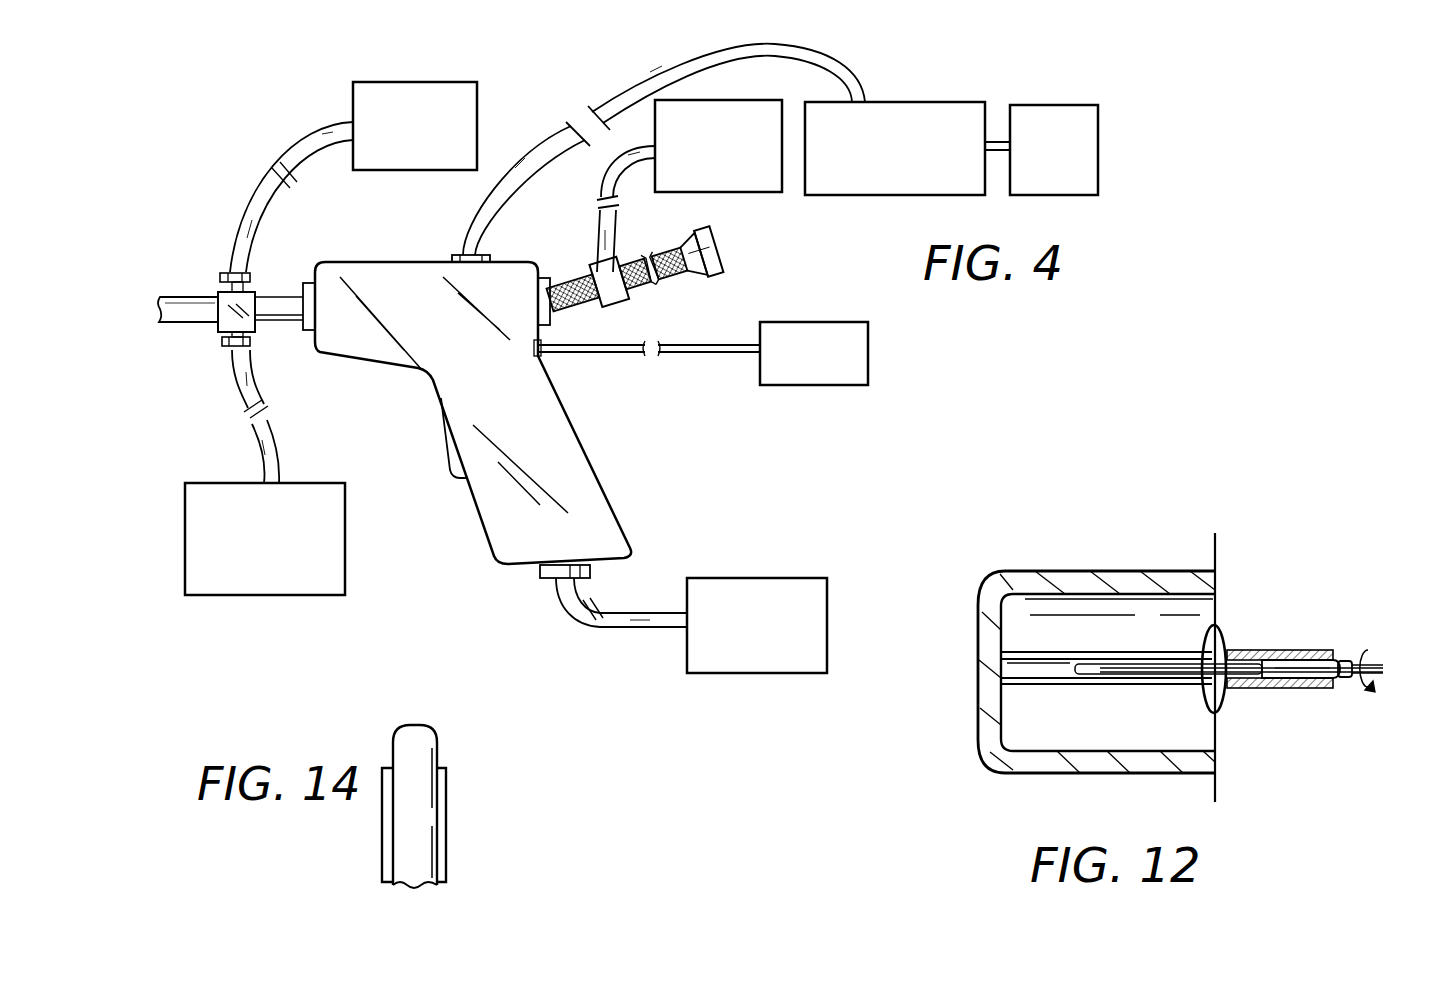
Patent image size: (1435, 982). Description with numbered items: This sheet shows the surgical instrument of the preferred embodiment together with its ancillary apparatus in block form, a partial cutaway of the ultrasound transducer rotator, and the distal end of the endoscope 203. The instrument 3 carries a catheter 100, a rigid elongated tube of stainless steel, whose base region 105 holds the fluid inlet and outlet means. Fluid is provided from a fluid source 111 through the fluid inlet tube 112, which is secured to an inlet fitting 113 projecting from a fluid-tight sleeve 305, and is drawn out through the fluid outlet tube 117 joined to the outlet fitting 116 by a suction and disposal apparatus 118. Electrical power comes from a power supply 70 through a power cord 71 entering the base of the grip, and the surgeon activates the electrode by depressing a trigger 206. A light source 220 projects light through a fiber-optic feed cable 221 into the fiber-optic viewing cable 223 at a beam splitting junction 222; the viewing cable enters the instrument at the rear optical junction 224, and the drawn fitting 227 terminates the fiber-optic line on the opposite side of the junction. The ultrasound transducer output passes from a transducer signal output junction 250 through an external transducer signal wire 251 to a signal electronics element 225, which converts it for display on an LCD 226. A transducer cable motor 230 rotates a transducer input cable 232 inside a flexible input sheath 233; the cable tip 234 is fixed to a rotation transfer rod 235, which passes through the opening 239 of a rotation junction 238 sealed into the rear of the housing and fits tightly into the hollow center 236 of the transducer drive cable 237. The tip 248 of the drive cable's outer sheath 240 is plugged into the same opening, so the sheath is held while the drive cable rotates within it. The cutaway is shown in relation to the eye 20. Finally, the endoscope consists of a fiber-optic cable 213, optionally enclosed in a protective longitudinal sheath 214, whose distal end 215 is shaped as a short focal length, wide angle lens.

In FIG. 4, the surgical instrument handpiece 3 is at (616, 507).
In FIG. 12, the eye 20 is at (1132, 813).
In FIG. 4, the electrical power supply 70 is at (797, 578).
In FIG. 4, the power cord 71 is at (578, 595).
In FIG. 4, the catheter 100 is at (175, 328).
In FIG. 4, the base region 105 is at (212, 274).
In FIG. 4, the fluid source 111 is at (477, 122).
In FIG. 4, the fluid inlet tube 112 is at (246, 195).
In FIG. 4, the inlet fitting 113 is at (246, 270).
In FIG. 4, the outlet fitting 116 is at (254, 340).
In FIG. 4, the fluid outlet tube 117 is at (267, 400).
In FIG. 4, the suction and disposal apparatus 118 is at (345, 562).
In FIG. 14, the endoscope 203 is at (457, 743).
In FIG. 4, the trigger 206 is at (441, 448).
In FIG. 14, the fiber-optic cable 213 is at (423, 798).
In FIG. 14, the protective longitudinal sheath 214 is at (448, 843).
In FIG. 14, the distal end 215 is at (420, 722).
In FIG. 4, the light source 220 is at (790, 102).
In FIG. 4, the fiber-optic feed cable 221 is at (626, 153).
In FIG. 4, the beam splitting junction 222 is at (624, 316).
In FIG. 4, the fiber-optic viewing cable 223 is at (574, 273).
In FIG. 4, the rear optical junction 224 is at (555, 276).
In FIG. 4, the signal electronics element 225 is at (942, 102).
In FIG. 4, the LCD 226 is at (1098, 130).
In FIG. 4, the nozzle fitting 227 is at (702, 250).
In FIG. 4, the transducer cable motor 230 is at (868, 378).
In FIG. 4, the transducer input cable 232 is at (710, 357).
In FIG. 12, the transducer input cable 232 is at (1346, 664).
In FIG. 12, the input sheath 233 is at (1315, 652).
In FIG. 12, the tip 234 is at (1258, 658).
In FIG. 12, the rotation transfer rod 235 is at (1253, 690).
In FIG. 12, the hollow center 236 is at (1082, 662).
In FIG. 12, the transducer drive cable 237 is at (1047, 676).
In FIG. 4, the rotation junction 238 is at (545, 358).
In FIG. 12, the rotation junction 238 is at (1226, 632).
In FIG. 12, the opening 239 is at (1225, 705).
In FIG. 12, the outer sheath 240 is at (1028, 650).
In FIG. 12, the tip 248 is at (1152, 655).
In FIG. 4, the transducer signal output junction 250 is at (460, 254).
In FIG. 4, the external transducer signal wire 251 is at (628, 98).
In FIG. 4, the fluid-tight sleeve 305 is at (232, 334).